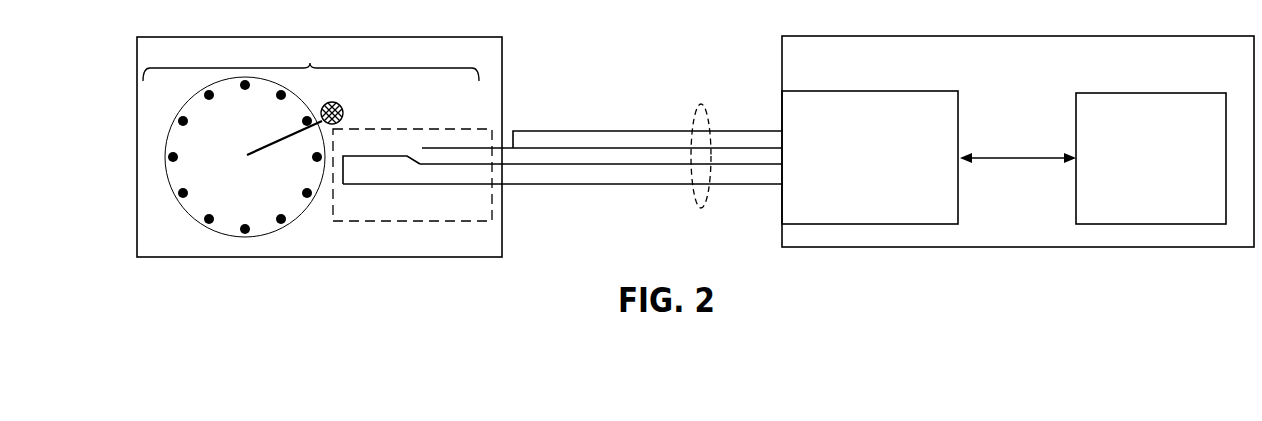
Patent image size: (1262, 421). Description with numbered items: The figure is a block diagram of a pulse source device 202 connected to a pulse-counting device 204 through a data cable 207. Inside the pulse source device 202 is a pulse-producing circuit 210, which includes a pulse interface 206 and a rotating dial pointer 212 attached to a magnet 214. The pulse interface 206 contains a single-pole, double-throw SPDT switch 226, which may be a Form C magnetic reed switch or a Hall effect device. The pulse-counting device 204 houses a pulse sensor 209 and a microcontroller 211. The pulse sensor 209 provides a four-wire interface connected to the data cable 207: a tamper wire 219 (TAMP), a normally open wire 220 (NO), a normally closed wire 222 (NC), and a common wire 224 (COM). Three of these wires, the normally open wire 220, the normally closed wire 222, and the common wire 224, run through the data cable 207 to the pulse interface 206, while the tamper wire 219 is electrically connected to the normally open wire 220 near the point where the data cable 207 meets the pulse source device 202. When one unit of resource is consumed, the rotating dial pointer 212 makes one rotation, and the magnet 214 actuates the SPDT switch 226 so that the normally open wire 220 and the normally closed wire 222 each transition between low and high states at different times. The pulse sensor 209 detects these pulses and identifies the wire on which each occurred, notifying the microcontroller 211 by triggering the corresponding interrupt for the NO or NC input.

The pulse source device 202 is at (510, 38).
The pulse-counting device 204 is at (1134, 65).
The pulse interface 206 is at (405, 230).
The data cable 207 is at (700, 109).
The pulse sensor 209 is at (887, 143).
The pulse-producing circuit 210 is at (311, 138).
The microcontroller 211 is at (1167, 180).
The rotating dial pointer 212 is at (222, 237).
The magnet 214 is at (343, 105).
The tamper wire 219 is at (606, 129).
The normally open wire 220 is at (531, 144).
The normally closed wire 222 is at (532, 170).
The common wire 224 is at (591, 186).
The SPDT switch 226 is at (409, 143).